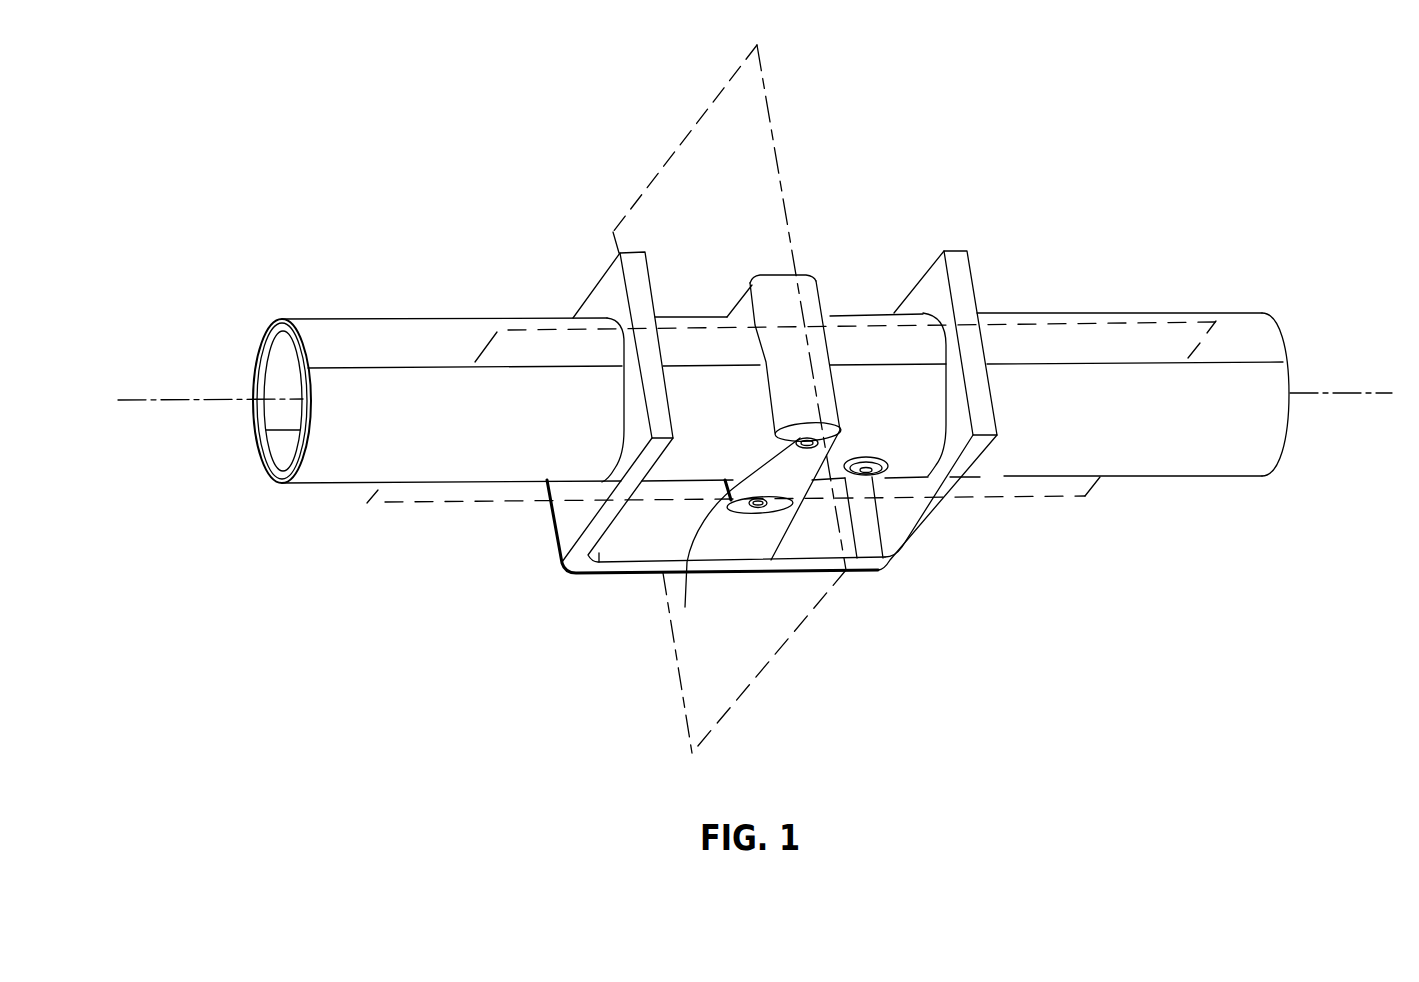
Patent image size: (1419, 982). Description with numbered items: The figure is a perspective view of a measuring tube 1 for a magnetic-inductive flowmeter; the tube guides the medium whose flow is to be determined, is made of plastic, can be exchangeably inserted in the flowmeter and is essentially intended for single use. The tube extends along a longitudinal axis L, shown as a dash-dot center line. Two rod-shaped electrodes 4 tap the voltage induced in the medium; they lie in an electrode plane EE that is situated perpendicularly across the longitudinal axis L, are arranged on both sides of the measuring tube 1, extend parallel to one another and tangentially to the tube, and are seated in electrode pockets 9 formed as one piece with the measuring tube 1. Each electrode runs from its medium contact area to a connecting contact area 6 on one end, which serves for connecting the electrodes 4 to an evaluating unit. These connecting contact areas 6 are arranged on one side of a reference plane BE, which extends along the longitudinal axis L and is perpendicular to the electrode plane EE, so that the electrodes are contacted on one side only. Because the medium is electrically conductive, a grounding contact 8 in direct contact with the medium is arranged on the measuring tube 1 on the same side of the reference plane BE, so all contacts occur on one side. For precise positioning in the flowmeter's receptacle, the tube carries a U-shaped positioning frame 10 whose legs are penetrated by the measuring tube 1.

The measuring tube 1 is at (313, 265).
The electrodes 4 is at (752, 504).
The connecting contact area 6 is at (807, 470).
The grounding contact 8 is at (866, 473).
The electrode pockets 9 is at (815, 297).
The positioning frame 10 is at (632, 570).
The longitudinal axis L is at (1338, 392).
The electrode plane EE is at (649, 185).
The reference plane BE is at (434, 504).